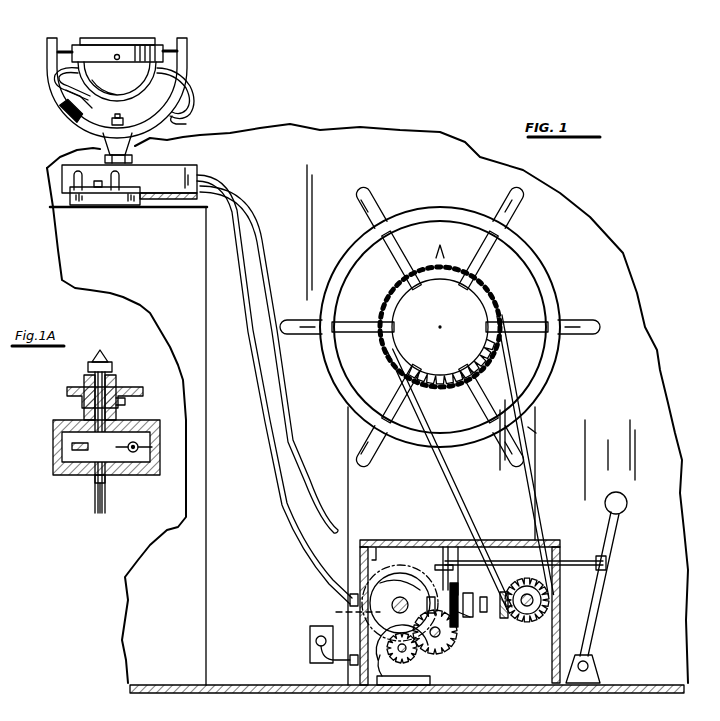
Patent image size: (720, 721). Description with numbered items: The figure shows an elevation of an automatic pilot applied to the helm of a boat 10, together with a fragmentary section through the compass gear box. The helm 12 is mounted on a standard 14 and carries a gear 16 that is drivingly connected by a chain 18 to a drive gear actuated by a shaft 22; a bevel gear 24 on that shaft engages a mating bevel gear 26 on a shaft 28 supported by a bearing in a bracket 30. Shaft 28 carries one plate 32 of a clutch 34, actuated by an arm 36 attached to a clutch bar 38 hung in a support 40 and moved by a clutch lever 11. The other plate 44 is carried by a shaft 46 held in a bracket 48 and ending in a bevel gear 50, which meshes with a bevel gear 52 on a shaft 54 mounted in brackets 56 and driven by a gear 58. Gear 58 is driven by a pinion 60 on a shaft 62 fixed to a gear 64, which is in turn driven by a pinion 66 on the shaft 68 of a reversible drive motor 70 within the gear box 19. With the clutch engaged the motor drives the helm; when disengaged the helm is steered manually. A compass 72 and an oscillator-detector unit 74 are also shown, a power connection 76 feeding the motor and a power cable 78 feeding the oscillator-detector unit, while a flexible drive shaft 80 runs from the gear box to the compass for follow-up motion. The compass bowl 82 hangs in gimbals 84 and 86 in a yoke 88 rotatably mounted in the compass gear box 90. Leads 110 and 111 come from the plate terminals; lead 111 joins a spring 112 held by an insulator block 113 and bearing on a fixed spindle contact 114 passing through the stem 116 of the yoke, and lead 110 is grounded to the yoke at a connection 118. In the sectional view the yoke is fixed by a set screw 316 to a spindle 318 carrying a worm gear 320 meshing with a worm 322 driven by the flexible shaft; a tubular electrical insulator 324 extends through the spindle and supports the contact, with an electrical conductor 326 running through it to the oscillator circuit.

In FIG. 1, the boat 10 is at (345, 170).
In FIG. 1, the hand lever 11 is at (612, 546).
In FIG. 1, the helm 12 is at (543, 278).
In FIG. 1, the standard 14 is at (536, 433).
In FIG. 1, the gear 16 is at (450, 388).
In FIG. 1, the chain 18 is at (531, 462).
In FIG. 1, the gear box 19 is at (410, 546).
In FIG. 1, the shaft 22 is at (534, 600).
In FIG. 1, the bevel gear 24 is at (541, 611).
In FIG. 1, the bevel gear 26 is at (505, 620).
In FIG. 1, the shaft 28 is at (474, 605).
In FIG. 1, the bracket 30 is at (486, 600).
In FIG. 1, the clutch plate 32 is at (468, 618).
In FIG. 1, the clutch 34 is at (460, 546).
In FIG. 1, the arm 36 is at (478, 566).
In FIG. 1, the clutch bar 38 is at (597, 558).
In FIG. 1, the support 40 is at (444, 546).
In FIG. 1, the clutch plate 44 is at (440, 564).
In FIG. 1, the shaft 46 is at (450, 600).
In FIG. 1, the bracket 48 is at (430, 596).
In FIG. 1, the bevel gear 50 is at (402, 580).
In FIG. 1, the bevel gear 52 is at (350, 611).
In FIG. 1, the shaft 54 is at (395, 598).
In FIG. 1, the brackets 56 is at (353, 592).
In FIG. 1, the gear 58 is at (376, 548).
In FIG. 1, the pinion 60 is at (452, 640).
In FIG. 1, the shaft 62 is at (441, 630).
In FIG. 1, the gear 64 is at (426, 658).
In FIG. 1, the pinion 66 is at (357, 654).
In FIG. 1, the shaft 68 is at (412, 660).
In FIG. 1, the reversible drive motor 70 is at (396, 686).
In FIG. 1, the compass 72 is at (146, 52).
In FIG. 1, the oscillator-detector unit 74 is at (117, 200).
In FIG. 1, the power connection 76 is at (338, 664).
In FIG. 1, the power cable 78 is at (287, 508).
In FIG. 1, the flexible drive shaft 80 is at (300, 452).
In FIG. 1A, the flexible drive shaft 80 is at (152, 448).
In FIG. 1, the compass bowl 82 is at (134, 97).
In FIG. 1, the gimbal 84 is at (66, 50).
In FIG. 1, the gimbal 86 is at (119, 55).
In FIG. 1, the yoke 88 is at (187, 65).
In FIG. 1A, the yoke 88 is at (67, 392).
In FIG. 1, the compass gear box 90 is at (182, 166).
In FIG. 1A, the compass gear box 90 is at (60, 435).
In FIG. 1, the flexible lead 110 is at (189, 106).
In FIG. 1, the flexible lead 111 is at (57, 78).
In FIG. 1, the spring 112 is at (70, 97).
In FIG. 1, the insulator block 113 is at (72, 110).
In FIG. 1, the fixed spindle contact 114 is at (110, 124).
In FIG. 1A, the fixed spindle contact 114 is at (93, 358).
In FIG. 1, the stem 116 is at (134, 156).
In FIG. 1, the connection 118 is at (180, 116).
In FIG. 1A, the set screw 316 is at (126, 403).
In FIG. 1A, the spindle 318 is at (116, 380).
In FIG. 1A, the worm gear 320 is at (72, 448).
In FIG. 1A, the worm 322 is at (136, 442).
In FIG. 1A, the tubular electrical insulator 324 is at (106, 481).
In FIG. 1A, the electrical conductor 326 is at (100, 502).